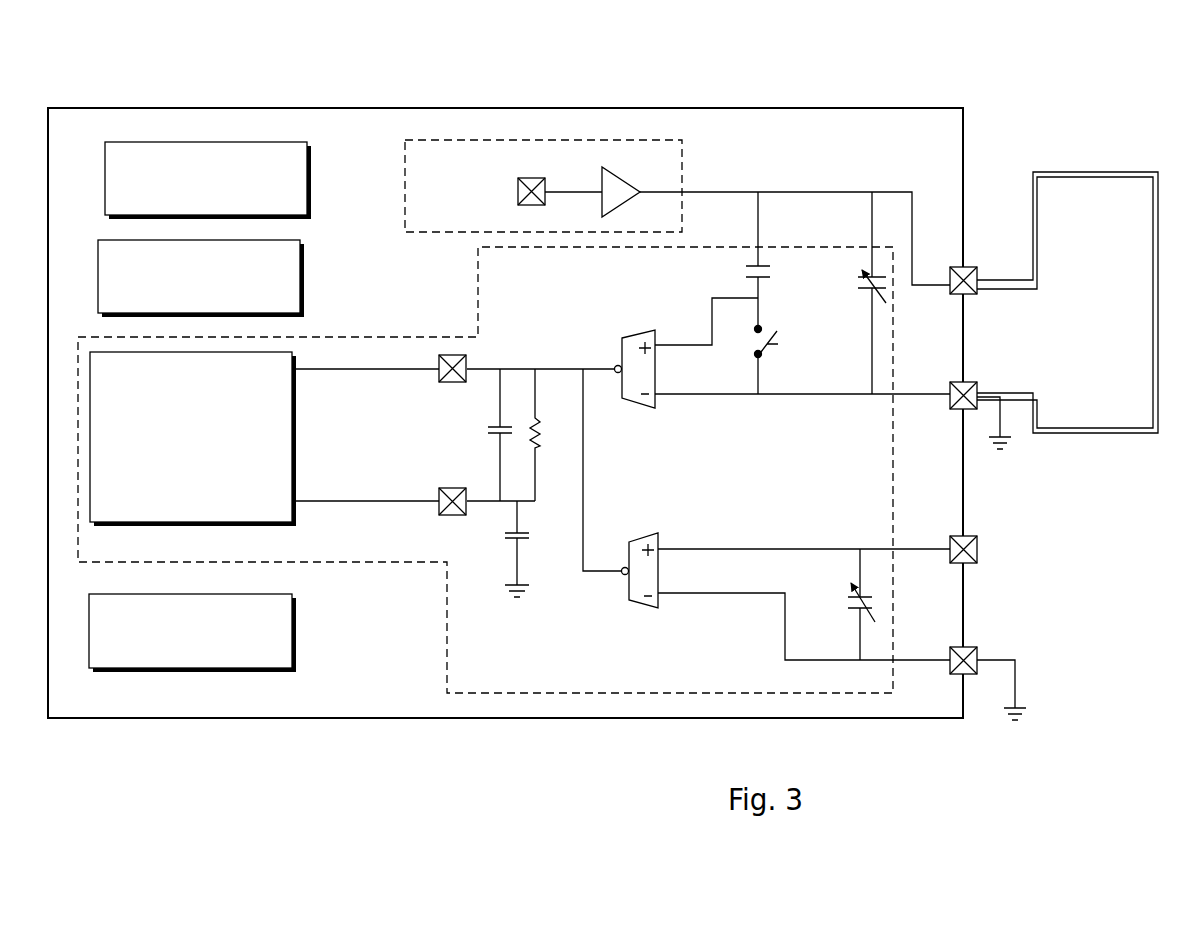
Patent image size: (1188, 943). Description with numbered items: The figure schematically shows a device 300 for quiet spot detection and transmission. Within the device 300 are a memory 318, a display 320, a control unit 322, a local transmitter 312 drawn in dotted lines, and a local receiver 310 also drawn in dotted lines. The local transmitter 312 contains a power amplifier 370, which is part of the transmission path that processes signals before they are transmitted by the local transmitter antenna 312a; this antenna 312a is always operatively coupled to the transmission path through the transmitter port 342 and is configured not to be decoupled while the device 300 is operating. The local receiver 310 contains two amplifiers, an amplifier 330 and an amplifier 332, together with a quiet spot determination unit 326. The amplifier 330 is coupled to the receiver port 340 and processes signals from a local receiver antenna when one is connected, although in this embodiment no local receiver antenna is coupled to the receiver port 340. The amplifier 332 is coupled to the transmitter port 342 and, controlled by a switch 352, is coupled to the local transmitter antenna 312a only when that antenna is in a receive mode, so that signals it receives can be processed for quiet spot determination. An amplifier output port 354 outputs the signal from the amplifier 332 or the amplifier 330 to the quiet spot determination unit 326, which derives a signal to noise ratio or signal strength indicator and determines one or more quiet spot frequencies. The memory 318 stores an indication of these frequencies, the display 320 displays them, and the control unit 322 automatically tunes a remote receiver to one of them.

The device 300 is at (568, 101).
The local receiver 310 is at (313, 570).
The local transmitter 312 is at (466, 134).
The local transmitter antenna 312a is at (1058, 166).
The memory 318 is at (222, 199).
The display 320 is at (215, 297).
The control unit 322 is at (206, 651).
The quiet spot determination unit 326 is at (206, 469).
The amplifier 330 is at (641, 610).
The amplifier 332 is at (647, 326).
The receiver port 340 is at (979, 638).
The transmitter port 342 is at (972, 378).
The switch 352 is at (780, 356).
The amplifier output port 354 is at (447, 480).
The power amplifier 370 is at (626, 170).